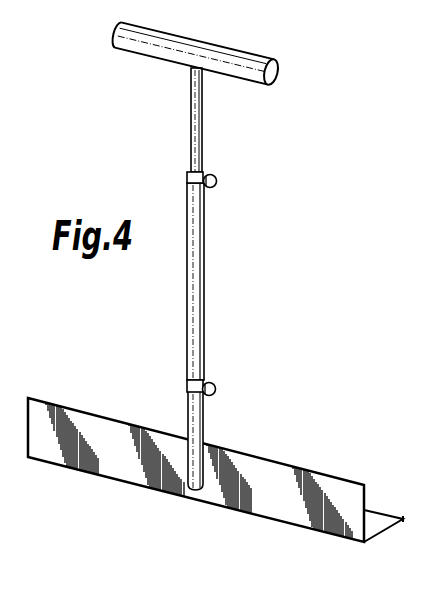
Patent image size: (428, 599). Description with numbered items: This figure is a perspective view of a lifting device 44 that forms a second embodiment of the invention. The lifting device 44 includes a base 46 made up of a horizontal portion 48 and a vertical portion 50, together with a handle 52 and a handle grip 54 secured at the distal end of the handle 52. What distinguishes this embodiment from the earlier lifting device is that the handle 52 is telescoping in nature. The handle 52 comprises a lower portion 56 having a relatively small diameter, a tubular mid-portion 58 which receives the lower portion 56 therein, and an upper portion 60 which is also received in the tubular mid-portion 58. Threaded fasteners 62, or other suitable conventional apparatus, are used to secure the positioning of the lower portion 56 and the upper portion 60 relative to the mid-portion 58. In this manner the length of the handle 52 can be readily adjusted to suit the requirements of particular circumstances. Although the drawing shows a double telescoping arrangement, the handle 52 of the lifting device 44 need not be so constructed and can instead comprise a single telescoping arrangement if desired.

The lifting device 44 is at (215, 252).
The base 46 is at (215, 457).
The horizontal portion 48 is at (377, 520).
The vertical portion 50 is at (280, 498).
The handle 52 is at (202, 279).
The handle grip 54 is at (259, 42).
The lower portion 56 is at (203, 422).
The tubular mid-portion 58 is at (204, 258).
The upper portion 60 is at (202, 111).
The threaded fasteners 62 is at (217, 181).